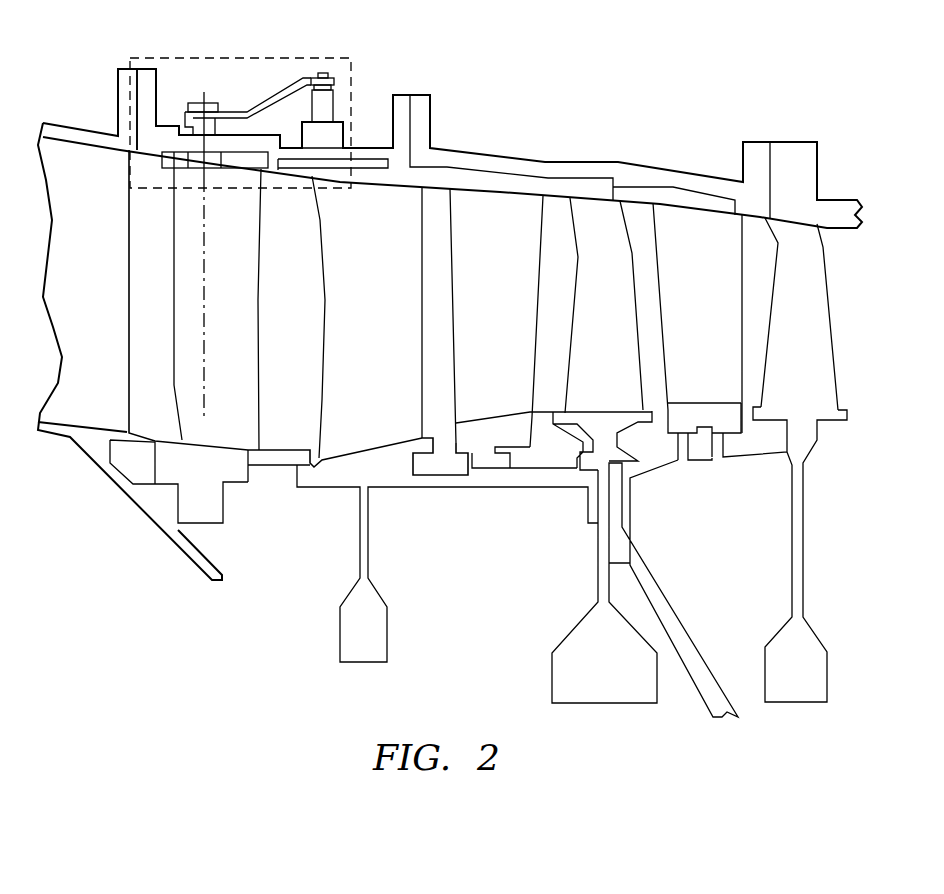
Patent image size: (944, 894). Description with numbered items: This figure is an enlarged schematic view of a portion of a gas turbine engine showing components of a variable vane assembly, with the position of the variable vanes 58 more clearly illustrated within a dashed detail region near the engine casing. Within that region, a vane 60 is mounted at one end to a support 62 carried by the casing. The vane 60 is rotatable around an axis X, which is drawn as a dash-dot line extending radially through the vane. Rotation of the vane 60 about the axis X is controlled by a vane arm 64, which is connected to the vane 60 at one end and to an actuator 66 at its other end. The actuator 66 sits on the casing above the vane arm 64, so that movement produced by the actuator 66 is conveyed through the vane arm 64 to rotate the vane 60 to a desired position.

The variable vanes 58 is at (150, 58).
The vane 60 is at (190, 246).
The support 62 is at (150, 143).
The vane arm 64 is at (233, 113).
The actuator 66 is at (323, 105).
The axis X is at (204, 390).